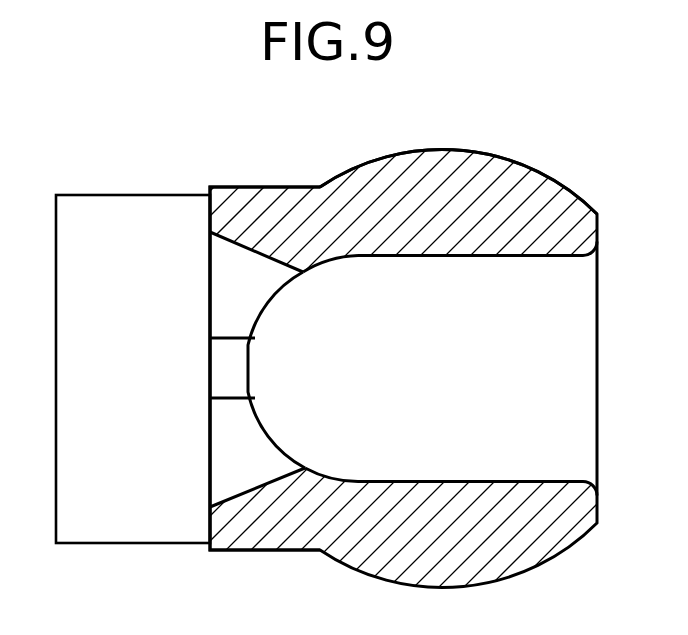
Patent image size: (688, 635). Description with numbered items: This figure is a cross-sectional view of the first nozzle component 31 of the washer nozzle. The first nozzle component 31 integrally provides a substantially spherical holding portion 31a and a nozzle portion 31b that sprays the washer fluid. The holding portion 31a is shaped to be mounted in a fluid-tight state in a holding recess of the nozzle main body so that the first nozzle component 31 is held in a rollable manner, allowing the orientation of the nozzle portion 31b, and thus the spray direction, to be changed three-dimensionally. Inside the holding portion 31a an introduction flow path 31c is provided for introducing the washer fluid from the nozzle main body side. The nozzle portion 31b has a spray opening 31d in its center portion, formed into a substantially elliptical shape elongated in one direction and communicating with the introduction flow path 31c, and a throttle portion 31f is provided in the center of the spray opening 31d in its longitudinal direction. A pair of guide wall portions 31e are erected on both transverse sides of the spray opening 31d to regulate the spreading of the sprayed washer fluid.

The first nozzle component 31 is at (584, 166).
The holding portion 31a is at (437, 150).
The nozzle portion 31b is at (211, 185).
The introduction flow path 31c is at (458, 257).
The spray opening 31d is at (240, 250).
The guide wall portion 31e is at (125, 207).
The throttle portion 31f is at (225, 368).